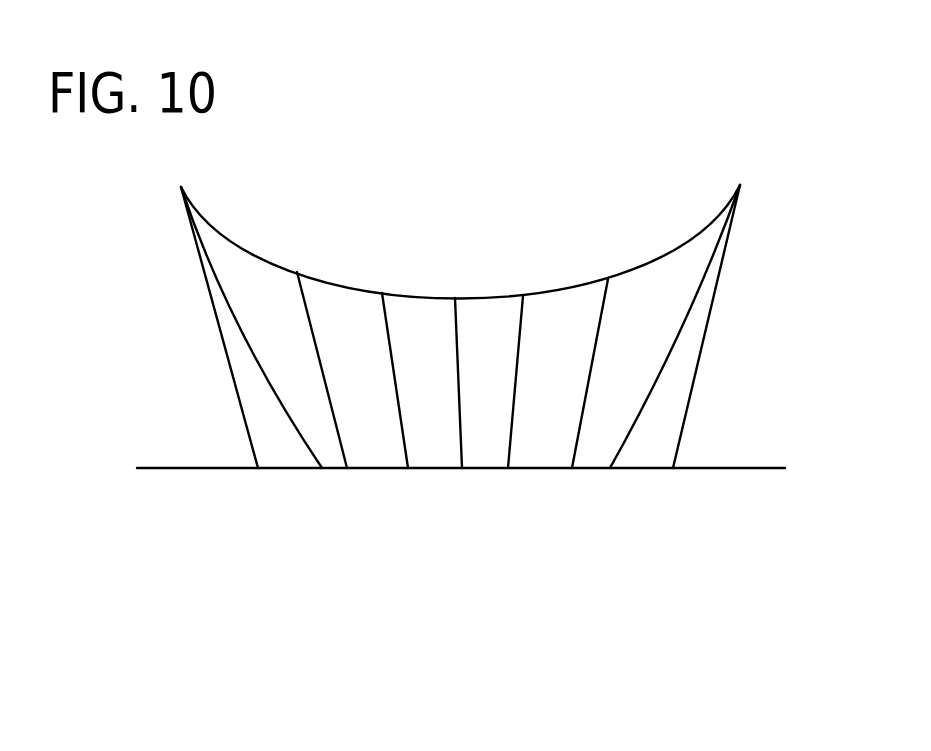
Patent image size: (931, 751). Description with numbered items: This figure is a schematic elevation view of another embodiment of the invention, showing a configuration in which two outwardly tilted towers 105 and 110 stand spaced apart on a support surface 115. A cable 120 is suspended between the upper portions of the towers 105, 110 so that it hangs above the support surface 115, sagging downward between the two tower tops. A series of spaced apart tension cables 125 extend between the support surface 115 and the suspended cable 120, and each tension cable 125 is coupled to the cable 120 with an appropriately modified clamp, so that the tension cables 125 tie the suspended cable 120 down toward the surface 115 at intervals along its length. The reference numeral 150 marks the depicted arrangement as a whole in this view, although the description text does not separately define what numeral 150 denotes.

The panel assembly 150 is at (700, 100).
The base surface 115 is at (752, 467).
The curved top edge 120 is at (437, 296).
The left side member 110 is at (233, 355).
The right side member 105 is at (690, 362).
The ribs 125 is at (337, 428).